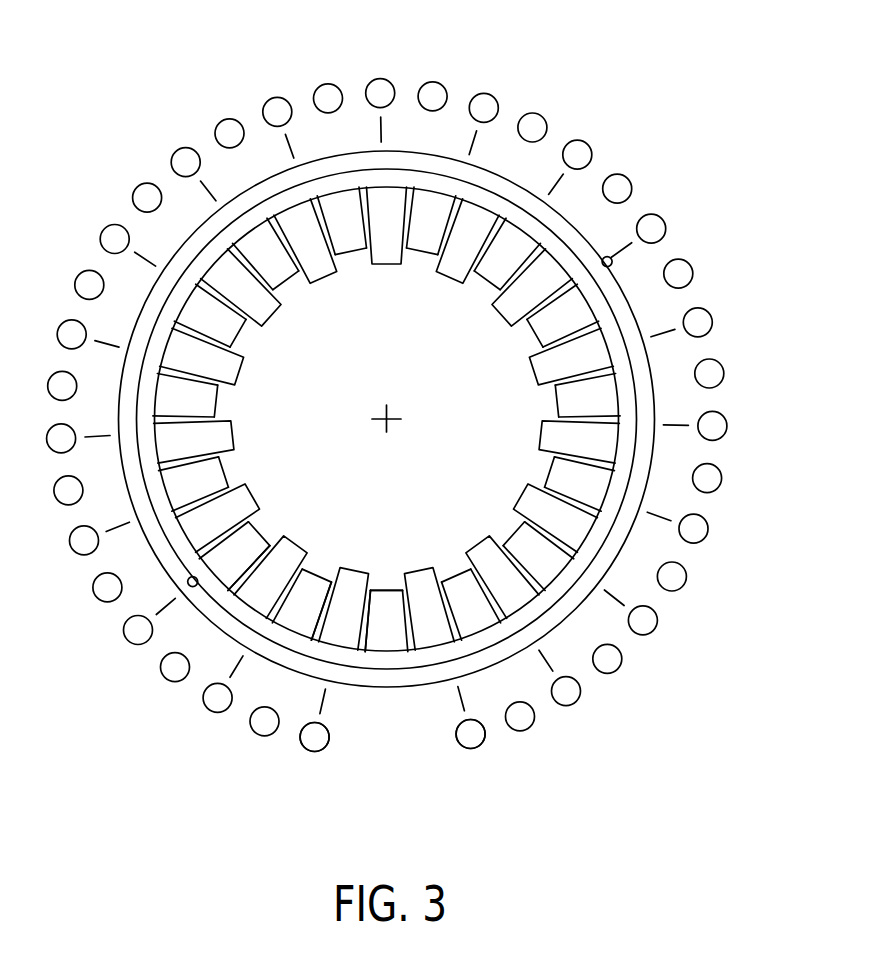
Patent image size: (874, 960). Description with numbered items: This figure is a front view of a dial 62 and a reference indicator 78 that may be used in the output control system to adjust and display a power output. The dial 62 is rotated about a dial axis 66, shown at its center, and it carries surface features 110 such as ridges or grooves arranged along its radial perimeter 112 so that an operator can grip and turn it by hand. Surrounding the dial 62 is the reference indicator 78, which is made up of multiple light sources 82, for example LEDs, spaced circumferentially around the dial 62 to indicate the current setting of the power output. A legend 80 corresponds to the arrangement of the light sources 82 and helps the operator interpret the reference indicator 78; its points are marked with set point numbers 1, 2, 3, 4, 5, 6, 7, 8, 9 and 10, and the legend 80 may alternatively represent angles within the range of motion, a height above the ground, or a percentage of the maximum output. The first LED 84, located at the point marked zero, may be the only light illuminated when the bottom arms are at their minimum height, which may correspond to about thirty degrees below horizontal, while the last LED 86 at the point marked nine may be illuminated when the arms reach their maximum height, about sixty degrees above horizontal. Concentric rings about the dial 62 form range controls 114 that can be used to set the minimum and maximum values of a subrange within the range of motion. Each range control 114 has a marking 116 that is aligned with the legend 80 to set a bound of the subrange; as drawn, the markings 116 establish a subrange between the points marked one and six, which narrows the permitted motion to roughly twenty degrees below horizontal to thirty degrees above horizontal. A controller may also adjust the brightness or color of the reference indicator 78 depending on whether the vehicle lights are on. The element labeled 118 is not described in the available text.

The dial 62 is at (398, 503).
The dial axis 66 is at (392, 409).
The reference indicator 78 is at (337, 758).
The legend 80 is at (350, 712).
The light sources 82 is at (437, 83).
The first LED 84 is at (305, 757).
The last LED 86 is at (482, 747).
The surface features 110 is at (317, 617).
The radial perimeter 112 is at (388, 612).
The range controls 114 is at (498, 170).
The marking 116 is at (615, 261).
The slot insulator 118 is at (228, 586).
The position 1 is at (169, 616).
The position 2 is at (97, 452).
The position 3 is at (142, 270).
The position 4 is at (280, 150).
The position 5 is at (464, 139).
The position 6 is at (620, 239).
The position 7 is at (675, 409).
The position 8 is at (618, 588).
The position 9 is at (470, 696).
The position 10 is at (332, 704).